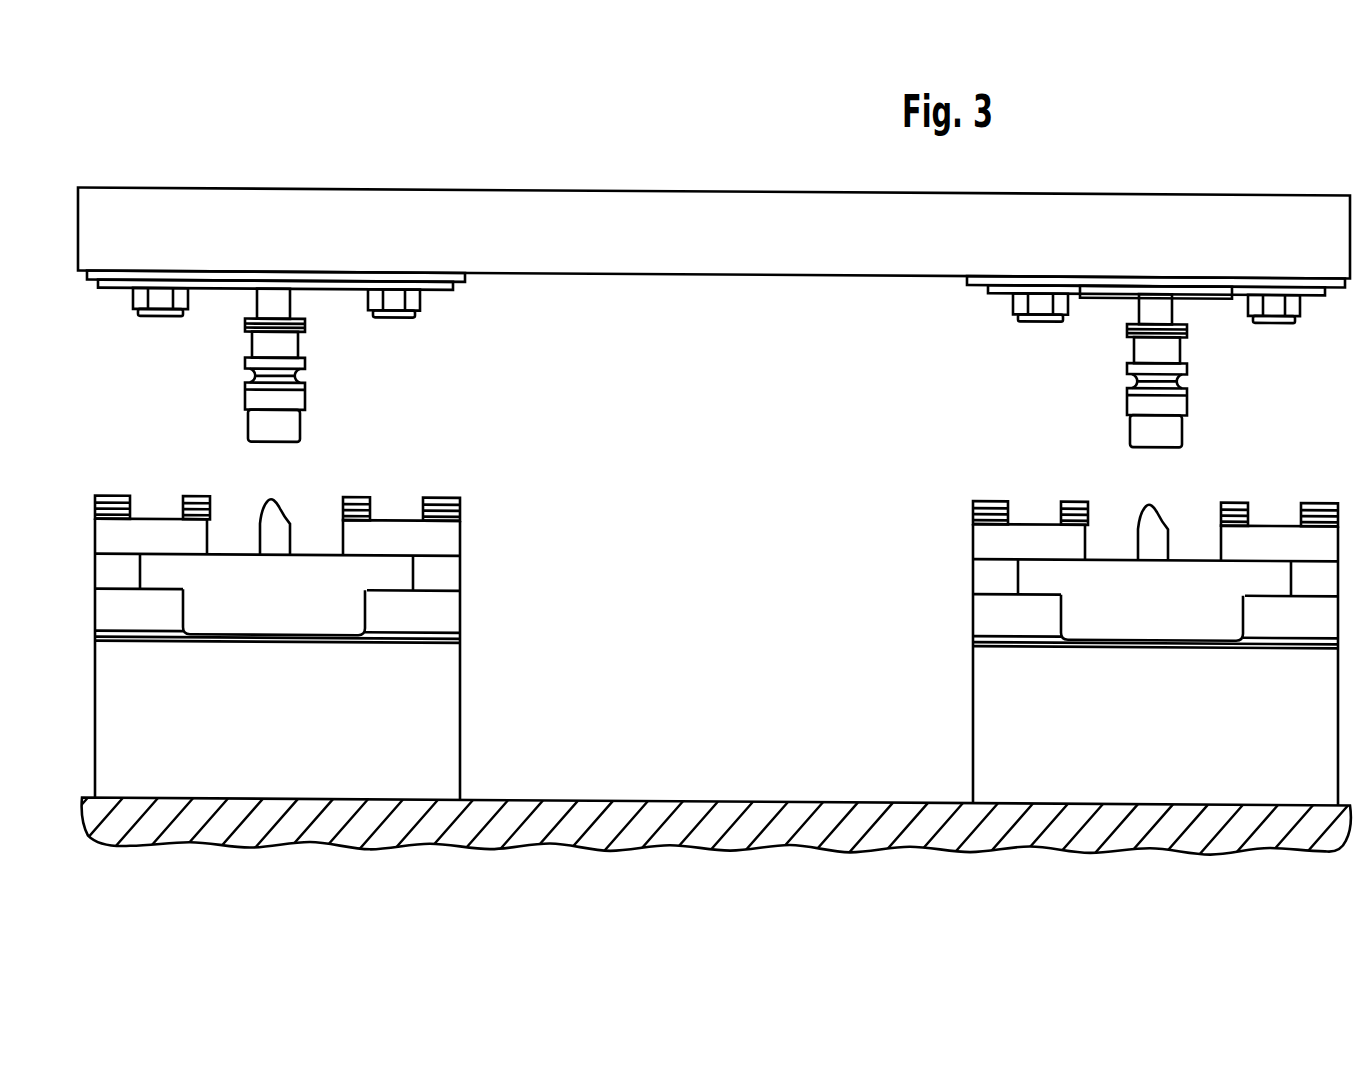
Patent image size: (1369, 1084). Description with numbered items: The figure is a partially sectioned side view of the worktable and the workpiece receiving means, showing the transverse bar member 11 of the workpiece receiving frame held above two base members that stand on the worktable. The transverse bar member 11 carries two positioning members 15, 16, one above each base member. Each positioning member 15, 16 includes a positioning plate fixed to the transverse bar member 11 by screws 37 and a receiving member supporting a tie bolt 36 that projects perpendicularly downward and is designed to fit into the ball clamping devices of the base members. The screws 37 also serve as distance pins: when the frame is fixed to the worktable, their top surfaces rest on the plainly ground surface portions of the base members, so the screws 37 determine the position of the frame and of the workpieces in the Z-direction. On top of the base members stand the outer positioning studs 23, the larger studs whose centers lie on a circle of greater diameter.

The transverse bar member 11 is at (690, 201).
The positioning member 15 is at (481, 288).
The positioning member 16 is at (950, 292).
The outer positioning stud 23 is at (113, 493).
The tie bolt 36 is at (304, 373).
The screw 37 is at (414, 298).